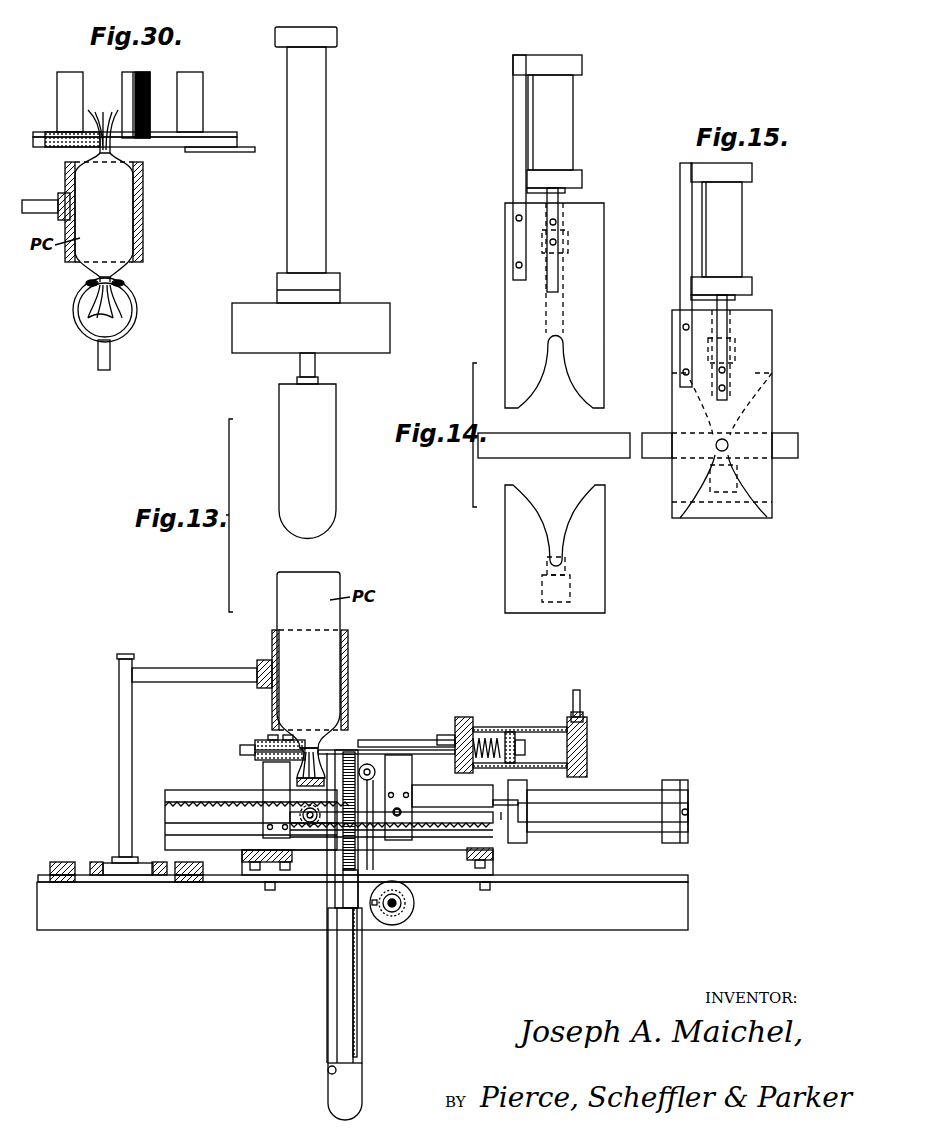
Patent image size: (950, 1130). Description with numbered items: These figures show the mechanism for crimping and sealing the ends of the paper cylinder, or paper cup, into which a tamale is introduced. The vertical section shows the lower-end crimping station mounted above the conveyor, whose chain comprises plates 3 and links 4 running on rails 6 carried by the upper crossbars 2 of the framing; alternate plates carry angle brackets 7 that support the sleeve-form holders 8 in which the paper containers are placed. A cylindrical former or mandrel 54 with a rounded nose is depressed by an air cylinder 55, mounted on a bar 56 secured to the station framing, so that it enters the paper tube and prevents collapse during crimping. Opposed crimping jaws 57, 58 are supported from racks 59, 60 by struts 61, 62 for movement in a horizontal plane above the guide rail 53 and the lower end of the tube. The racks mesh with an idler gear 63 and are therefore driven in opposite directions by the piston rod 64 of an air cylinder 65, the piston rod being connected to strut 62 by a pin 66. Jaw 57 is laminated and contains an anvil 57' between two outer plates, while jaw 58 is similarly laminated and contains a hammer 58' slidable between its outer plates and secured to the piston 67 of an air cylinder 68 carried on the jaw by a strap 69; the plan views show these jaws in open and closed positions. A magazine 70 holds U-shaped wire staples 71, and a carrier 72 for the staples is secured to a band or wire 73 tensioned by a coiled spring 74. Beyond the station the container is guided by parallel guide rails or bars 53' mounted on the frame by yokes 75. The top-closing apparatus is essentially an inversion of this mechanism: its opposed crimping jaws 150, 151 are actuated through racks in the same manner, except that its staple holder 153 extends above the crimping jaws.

In FIG. 13, the upper crossbars 2 is at (455, 910).
In FIG. 13, the plates 3 is at (138, 866).
In FIG. 13, the links 4 is at (148, 875).
In FIG. 13, the rails 6 is at (68, 872).
In FIG. 30, the angle brackets 7 is at (36, 205).
In FIG. 13, the angle brackets 7 is at (160, 680).
In FIG. 30, the holders 8 is at (143, 207).
In FIG. 13, the holders 8 is at (272, 645).
In FIG. 13, the guide rail 53 is at (277, 776).
In FIG. 14, the guide rail 53 is at (558, 461).
In FIG. 15, the guide rail 53 is at (720, 430).
In FIG. 30, the guide rails or bars 53' is at (106, 281).
In FIG. 13, the former or mandrel 54 is at (322, 413).
In FIG. 13, the air cylinder 55 is at (327, 229).
In FIG. 13, the bar 56 is at (256, 322).
In FIG. 13, the crimping jaw 57 is at (271, 738).
In FIG. 14, the crimping jaw 57 is at (537, 549).
In FIG. 15, the crimping jaw 57 is at (723, 499).
In FIG. 13, the anvil 57' is at (233, 751).
In FIG. 14, the anvil 57' is at (563, 597).
In FIG. 15, the anvil 57' is at (729, 499).
In FIG. 13, the crimping jaw 58 is at (465, 778).
In FIG. 14, the crimping jaw 58 is at (535, 305).
In FIG. 15, the crimping jaw 58 is at (736, 414).
In FIG. 14, the hammer 58' is at (571, 268).
In FIG. 13, the rack 59 is at (440, 832).
In FIG. 13, the rack 60 is at (182, 800).
In FIG. 13, the strut 61 is at (270, 812).
In FIG. 13, the strut 62 is at (398, 755).
In FIG. 13, the idler gear 63 is at (310, 826).
In FIG. 13, the piston rod 64 is at (501, 815).
In FIG. 13, the air cylinder 65 is at (612, 795).
In FIG. 13, the pin 66 is at (397, 815).
In FIG. 13, the piston 67 is at (508, 732).
In FIG. 14, the piston 67 is at (560, 195).
In FIG. 15, the piston 67 is at (728, 301).
In FIG. 13, the air cylinder 68 is at (528, 728).
In FIG. 14, the air cylinder 68 is at (573, 135).
In FIG. 15, the air cylinder 68 is at (736, 241).
In FIG. 14, the strap 69 is at (513, 163).
In FIG. 15, the strap 69 is at (680, 262).
In FIG. 13, the magazine 70 is at (340, 983).
In FIG. 30, the wire staples 71 is at (148, 78).
In FIG. 13, the wire staples 71 is at (311, 748).
In FIG. 13, the carrier 72 is at (347, 890).
In FIG. 13, the band or wire 73 is at (375, 872).
In FIG. 13, the coiled spring 74 is at (390, 925).
In FIG. 30, the yokes 75 is at (135, 322).
In FIG. 30, the crimping jaw 150 is at (60, 147).
In FIG. 30, the crimping jaw 151 is at (150, 147).
In FIG. 30, the staple holder 153 is at (124, 87).